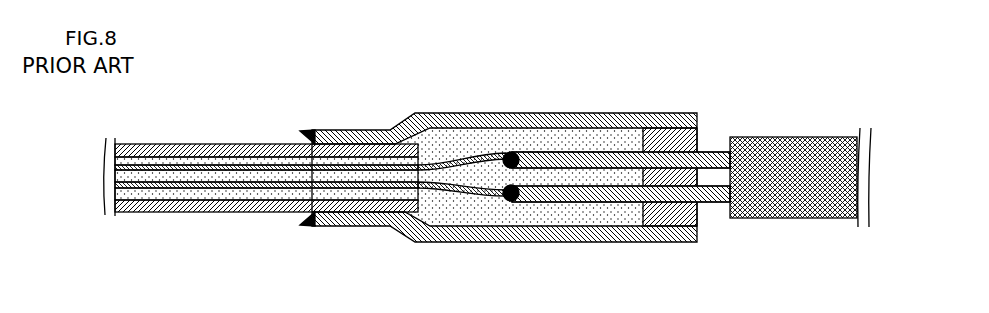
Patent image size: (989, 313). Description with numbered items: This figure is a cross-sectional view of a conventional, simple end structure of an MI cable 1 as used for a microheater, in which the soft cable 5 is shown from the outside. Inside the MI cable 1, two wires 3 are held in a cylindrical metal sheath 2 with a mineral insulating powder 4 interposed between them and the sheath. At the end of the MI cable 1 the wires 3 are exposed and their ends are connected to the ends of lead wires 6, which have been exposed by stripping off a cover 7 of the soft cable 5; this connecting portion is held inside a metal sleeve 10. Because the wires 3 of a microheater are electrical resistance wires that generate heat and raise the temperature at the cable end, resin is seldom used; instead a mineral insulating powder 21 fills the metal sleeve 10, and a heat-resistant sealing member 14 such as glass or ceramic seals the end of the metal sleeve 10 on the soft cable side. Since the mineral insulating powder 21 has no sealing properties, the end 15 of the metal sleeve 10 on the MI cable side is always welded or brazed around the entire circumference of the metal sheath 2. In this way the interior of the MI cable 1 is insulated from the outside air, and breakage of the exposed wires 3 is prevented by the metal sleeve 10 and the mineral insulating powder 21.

The MI cable 1 is at (310, 150).
The metal sheath 2 is at (185, 144).
The wires 3 is at (238, 165).
The mineral insulating powder 4 is at (195, 212).
The soft cable 5 is at (800, 146).
The lead wires 6 is at (563, 152).
The cover 7 is at (758, 218).
The metal sleeve 10 is at (503, 113).
The sealing member 14 is at (700, 226).
The end of the metal sleeve 15 is at (303, 132).
The mineral insulating powder 21 is at (490, 226).